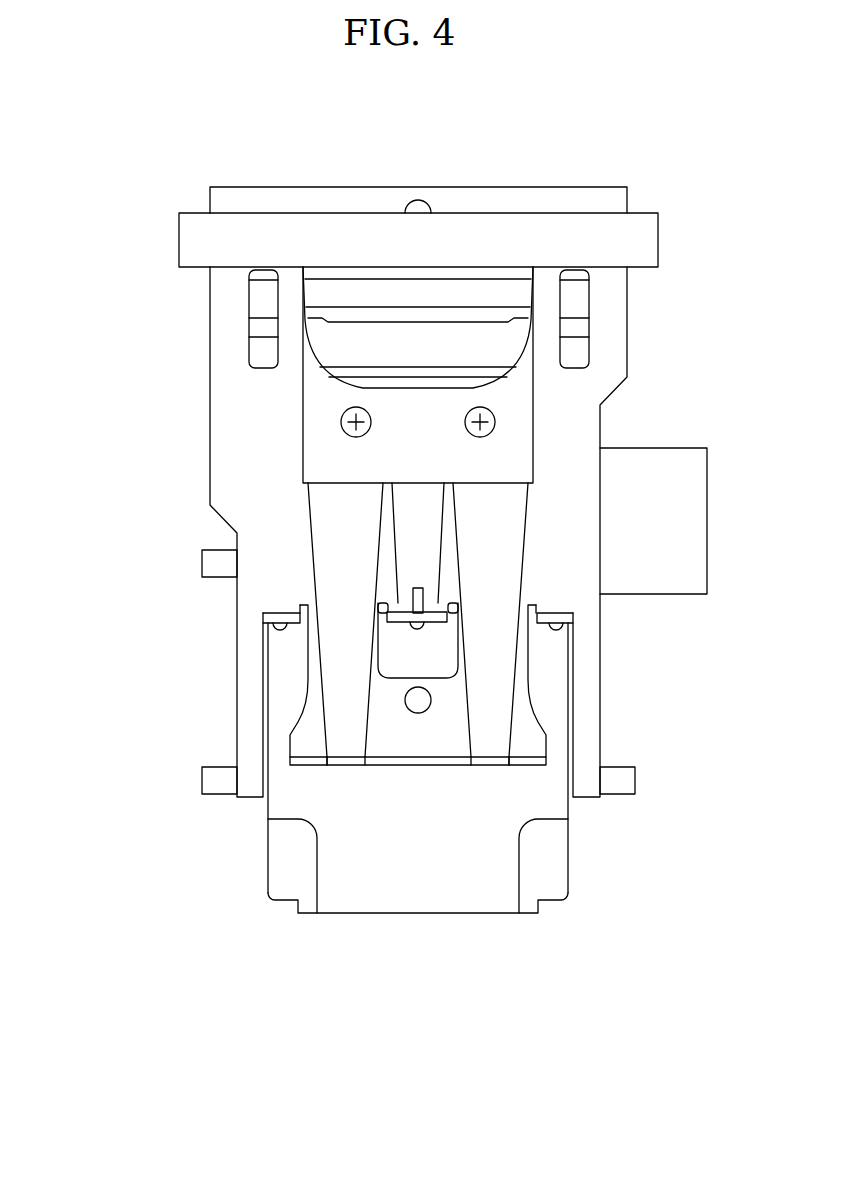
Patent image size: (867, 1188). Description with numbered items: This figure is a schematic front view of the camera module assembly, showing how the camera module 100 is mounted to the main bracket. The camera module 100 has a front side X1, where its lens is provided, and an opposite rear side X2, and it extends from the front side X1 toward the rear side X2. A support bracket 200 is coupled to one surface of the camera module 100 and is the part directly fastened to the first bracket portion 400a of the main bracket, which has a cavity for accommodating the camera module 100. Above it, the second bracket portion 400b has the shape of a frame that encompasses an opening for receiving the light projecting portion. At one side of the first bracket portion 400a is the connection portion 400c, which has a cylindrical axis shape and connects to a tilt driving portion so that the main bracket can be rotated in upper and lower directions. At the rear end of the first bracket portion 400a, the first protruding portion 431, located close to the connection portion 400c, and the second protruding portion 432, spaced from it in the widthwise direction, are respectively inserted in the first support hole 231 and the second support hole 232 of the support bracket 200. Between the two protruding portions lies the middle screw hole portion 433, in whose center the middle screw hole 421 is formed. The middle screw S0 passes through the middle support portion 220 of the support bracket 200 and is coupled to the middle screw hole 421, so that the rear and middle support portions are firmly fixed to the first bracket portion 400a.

The front side X1 is at (474, 187).
The rear side X2 is at (421, 914).
The camera module 100 is at (364, 896).
The support bracket 200 is at (443, 733).
The middle support portion 220 is at (445, 617).
The first support hole 231 is at (509, 765).
The second support hole 232 is at (327, 765).
The first bracket portion 400a is at (222, 431).
The second bracket portion 400b is at (188, 232).
The connection portion 400c is at (683, 455).
The middle screw hole 421 is at (413, 593).
The first protruding portion 431 is at (498, 712).
The second protruding portion 432 is at (340, 720).
The middle screw hole portion 433 is at (410, 553).
The middle screw S0 is at (423, 628).